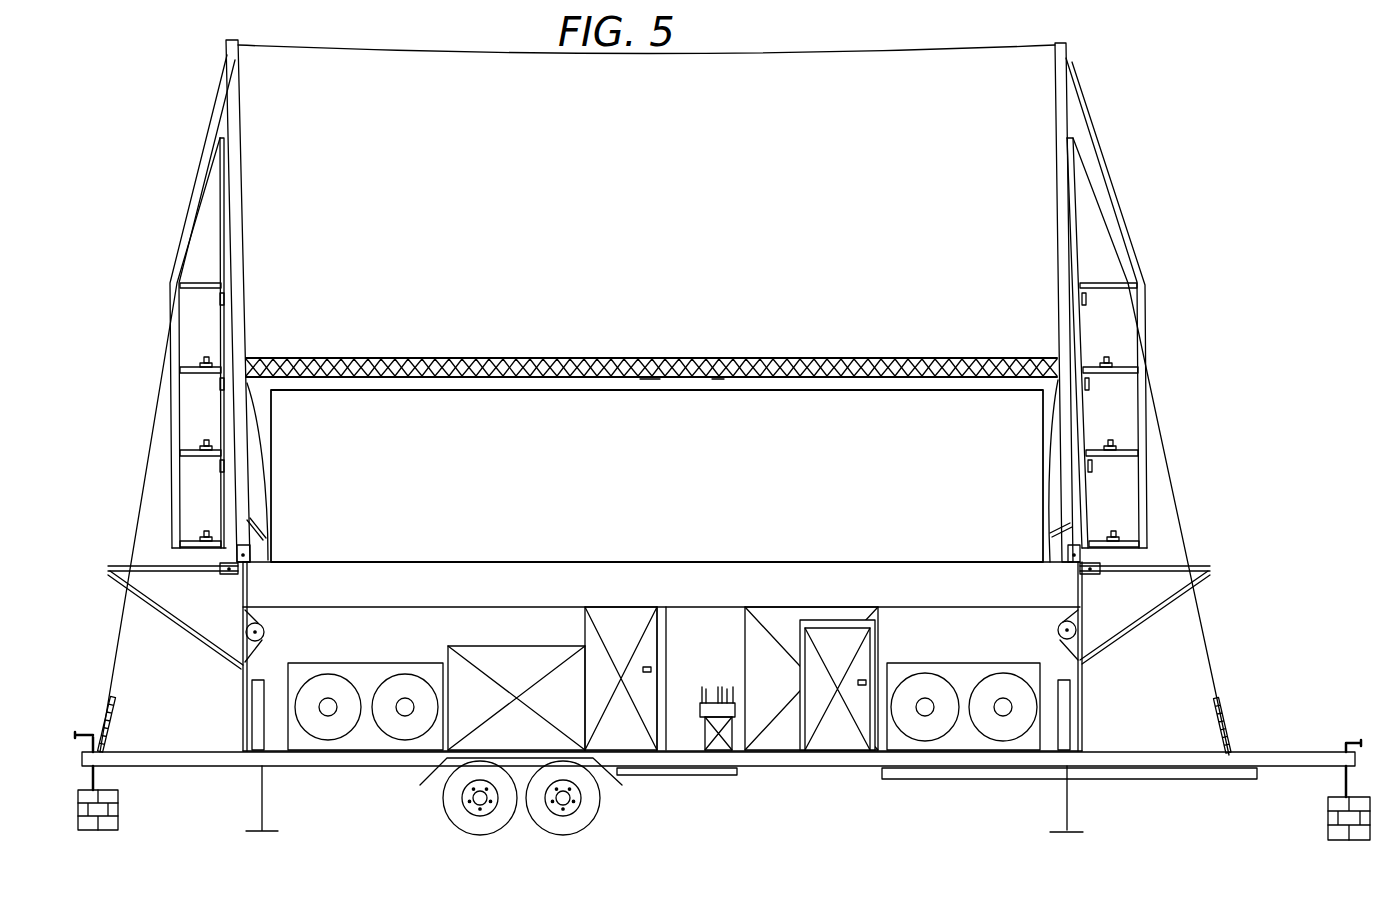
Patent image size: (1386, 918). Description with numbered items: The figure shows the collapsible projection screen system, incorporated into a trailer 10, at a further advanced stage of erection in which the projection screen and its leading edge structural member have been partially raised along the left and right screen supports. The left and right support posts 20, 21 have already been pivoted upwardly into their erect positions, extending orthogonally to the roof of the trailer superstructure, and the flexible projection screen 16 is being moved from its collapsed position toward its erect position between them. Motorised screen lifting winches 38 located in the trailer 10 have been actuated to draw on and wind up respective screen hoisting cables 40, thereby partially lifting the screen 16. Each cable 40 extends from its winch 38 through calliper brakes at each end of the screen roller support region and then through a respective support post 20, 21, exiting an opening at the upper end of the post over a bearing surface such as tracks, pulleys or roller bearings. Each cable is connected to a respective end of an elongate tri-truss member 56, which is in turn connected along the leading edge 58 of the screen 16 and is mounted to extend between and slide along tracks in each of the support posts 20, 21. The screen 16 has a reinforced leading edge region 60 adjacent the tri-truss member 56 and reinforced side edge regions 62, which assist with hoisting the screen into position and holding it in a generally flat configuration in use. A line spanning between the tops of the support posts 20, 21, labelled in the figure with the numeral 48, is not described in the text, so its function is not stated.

The trailer 10 is at (706, 798).
The flexible projection screen 16 is at (616, 503).
The support post 20 is at (236, 187).
The support post 21 is at (1063, 194).
The motorised screen lifting winch 38 is at (270, 636).
The screen hoisting cable 40 is at (253, 268).
The cable 48 is at (722, 57).
The tri-truss member 56 is at (554, 357).
The leading edge 58 is at (650, 378).
The reinforced leading edge region 60 is at (718, 378).
The reinforced side edge region 62 is at (256, 492).